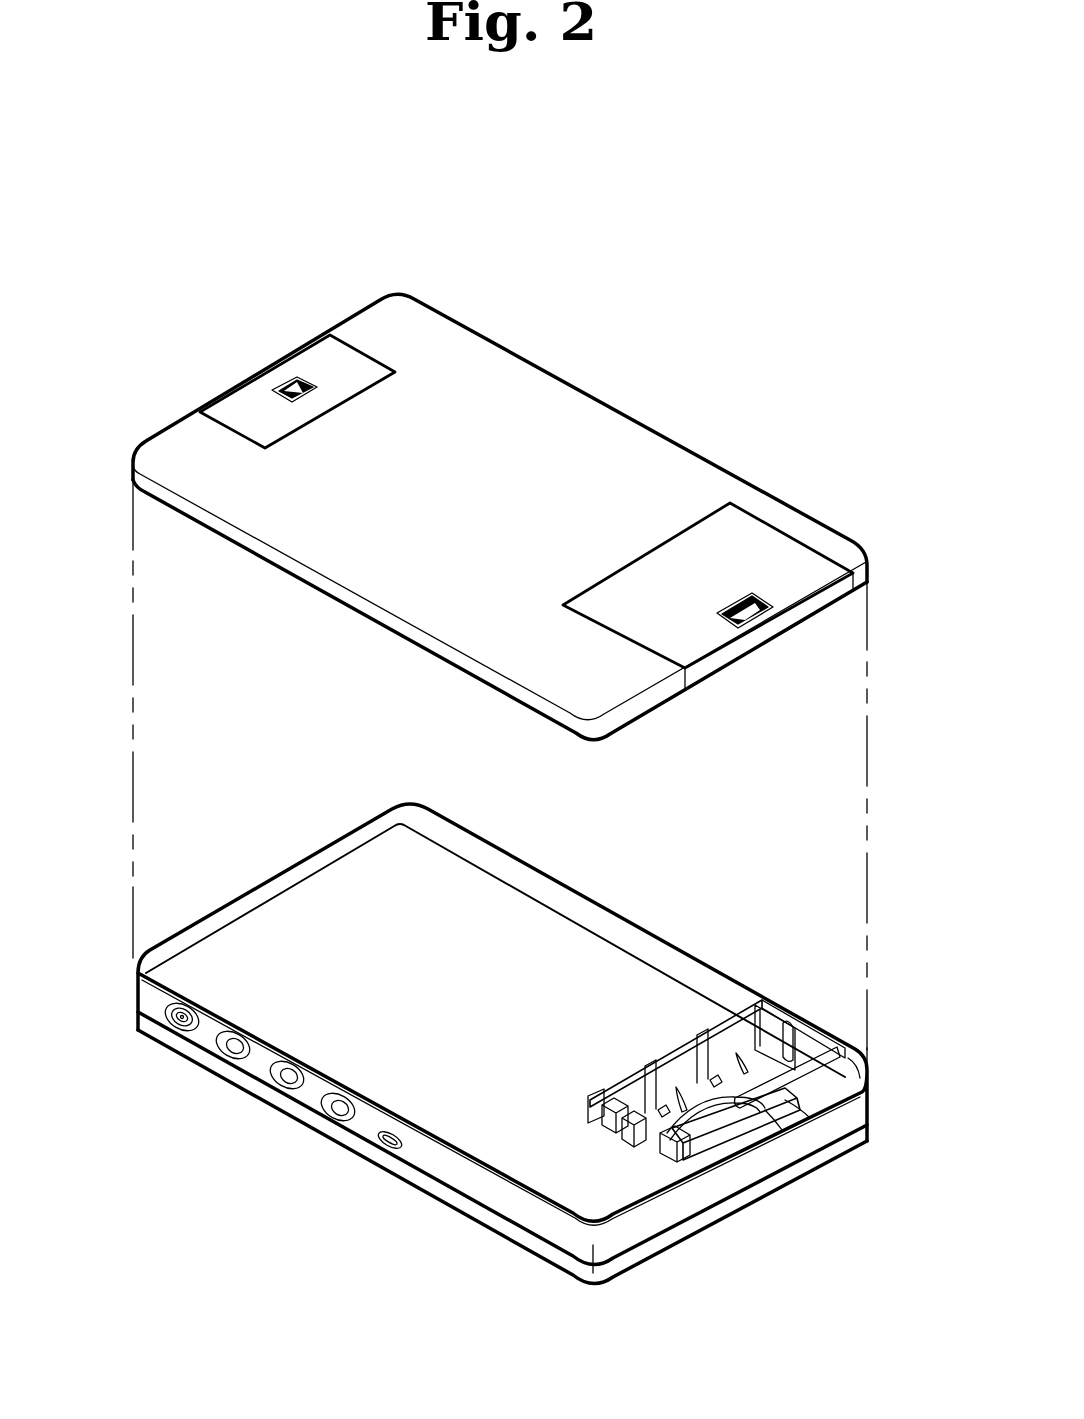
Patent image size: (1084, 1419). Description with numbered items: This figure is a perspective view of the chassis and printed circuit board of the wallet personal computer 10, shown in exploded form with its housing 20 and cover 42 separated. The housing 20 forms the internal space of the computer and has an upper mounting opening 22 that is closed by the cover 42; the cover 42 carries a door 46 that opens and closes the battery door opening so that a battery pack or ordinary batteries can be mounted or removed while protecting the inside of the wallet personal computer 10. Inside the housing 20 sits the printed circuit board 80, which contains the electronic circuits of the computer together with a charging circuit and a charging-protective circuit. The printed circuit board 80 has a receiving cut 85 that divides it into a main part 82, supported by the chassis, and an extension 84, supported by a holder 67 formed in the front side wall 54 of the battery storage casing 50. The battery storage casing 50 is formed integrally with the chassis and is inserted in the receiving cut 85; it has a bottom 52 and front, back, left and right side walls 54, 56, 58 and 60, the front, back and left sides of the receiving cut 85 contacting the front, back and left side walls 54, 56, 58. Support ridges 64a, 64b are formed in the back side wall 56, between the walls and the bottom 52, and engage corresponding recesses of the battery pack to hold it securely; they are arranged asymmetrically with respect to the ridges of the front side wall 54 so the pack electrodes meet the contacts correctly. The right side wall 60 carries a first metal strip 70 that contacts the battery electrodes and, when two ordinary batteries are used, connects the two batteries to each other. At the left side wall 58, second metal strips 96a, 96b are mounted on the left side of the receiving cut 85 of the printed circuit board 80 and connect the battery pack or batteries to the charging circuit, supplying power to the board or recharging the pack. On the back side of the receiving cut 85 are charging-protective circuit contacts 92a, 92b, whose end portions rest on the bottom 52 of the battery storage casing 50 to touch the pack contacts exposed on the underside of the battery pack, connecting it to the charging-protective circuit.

The wallet personal computer 10 is at (559, 218).
The housing 20 is at (683, 1202).
The upper mounting opening 22 is at (552, 876).
The cover 42 is at (652, 459).
The door 46 is at (750, 548).
The battery storage casing 50 is at (870, 1132).
The bottom 52 is at (860, 1052).
The front side wall 54 is at (810, 1089).
The back side wall 56 is at (628, 1068).
The left side wall 58 is at (690, 1118).
The right side wall 60 is at (780, 1030).
The support ridge 64a is at (740, 1053).
The support ridge 64b is at (683, 1087).
The holder 67 is at (788, 1100).
The first metal strip 70 is at (770, 1023).
The printed circuit board 80 is at (305, 912).
The main part 82 is at (598, 960).
The extension 84 is at (617, 1195).
The receiving cut 85 is at (770, 1112).
The charging-protective circuit contact 92a is at (635, 1090).
The charging-protective circuit contact 92b is at (702, 1033).
The second metal strip 96a is at (605, 1123).
The second metal strip 96b is at (637, 1140).